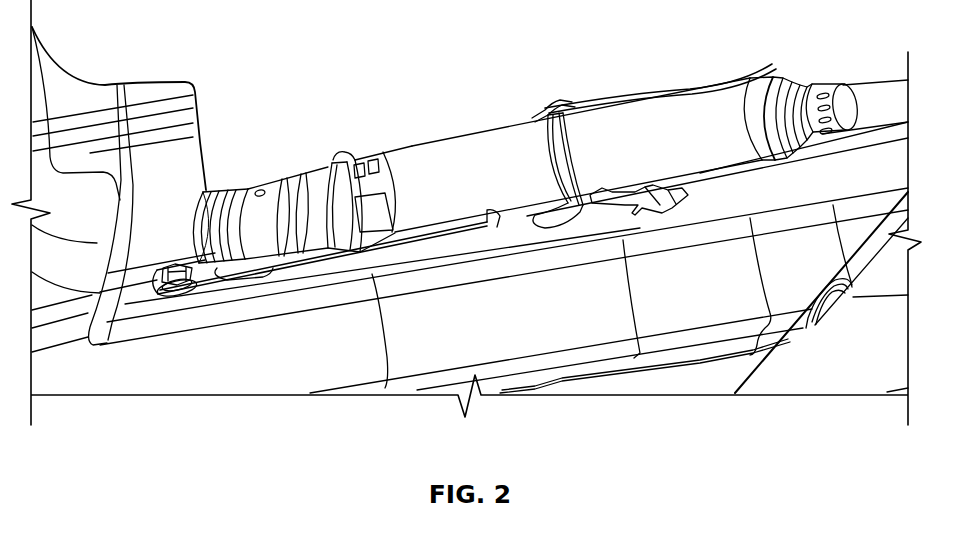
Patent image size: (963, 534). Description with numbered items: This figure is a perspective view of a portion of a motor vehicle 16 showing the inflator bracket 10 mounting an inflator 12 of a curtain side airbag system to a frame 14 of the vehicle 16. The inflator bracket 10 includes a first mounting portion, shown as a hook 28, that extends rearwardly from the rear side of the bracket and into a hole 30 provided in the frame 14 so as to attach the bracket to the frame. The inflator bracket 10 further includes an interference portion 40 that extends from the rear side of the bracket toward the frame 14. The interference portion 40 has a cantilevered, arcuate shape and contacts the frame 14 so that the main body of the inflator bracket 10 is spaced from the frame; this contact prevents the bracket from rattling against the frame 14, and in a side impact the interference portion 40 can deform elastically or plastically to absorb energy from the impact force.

The inflator bracket 10 is at (284, 288).
The inflator 12 is at (448, 138).
The frame 14 is at (677, 307).
The motor vehicle 16 is at (153, 76).
The hook 28 is at (685, 190).
The hole 30 is at (687, 217).
The interference portion 40 is at (297, 283).